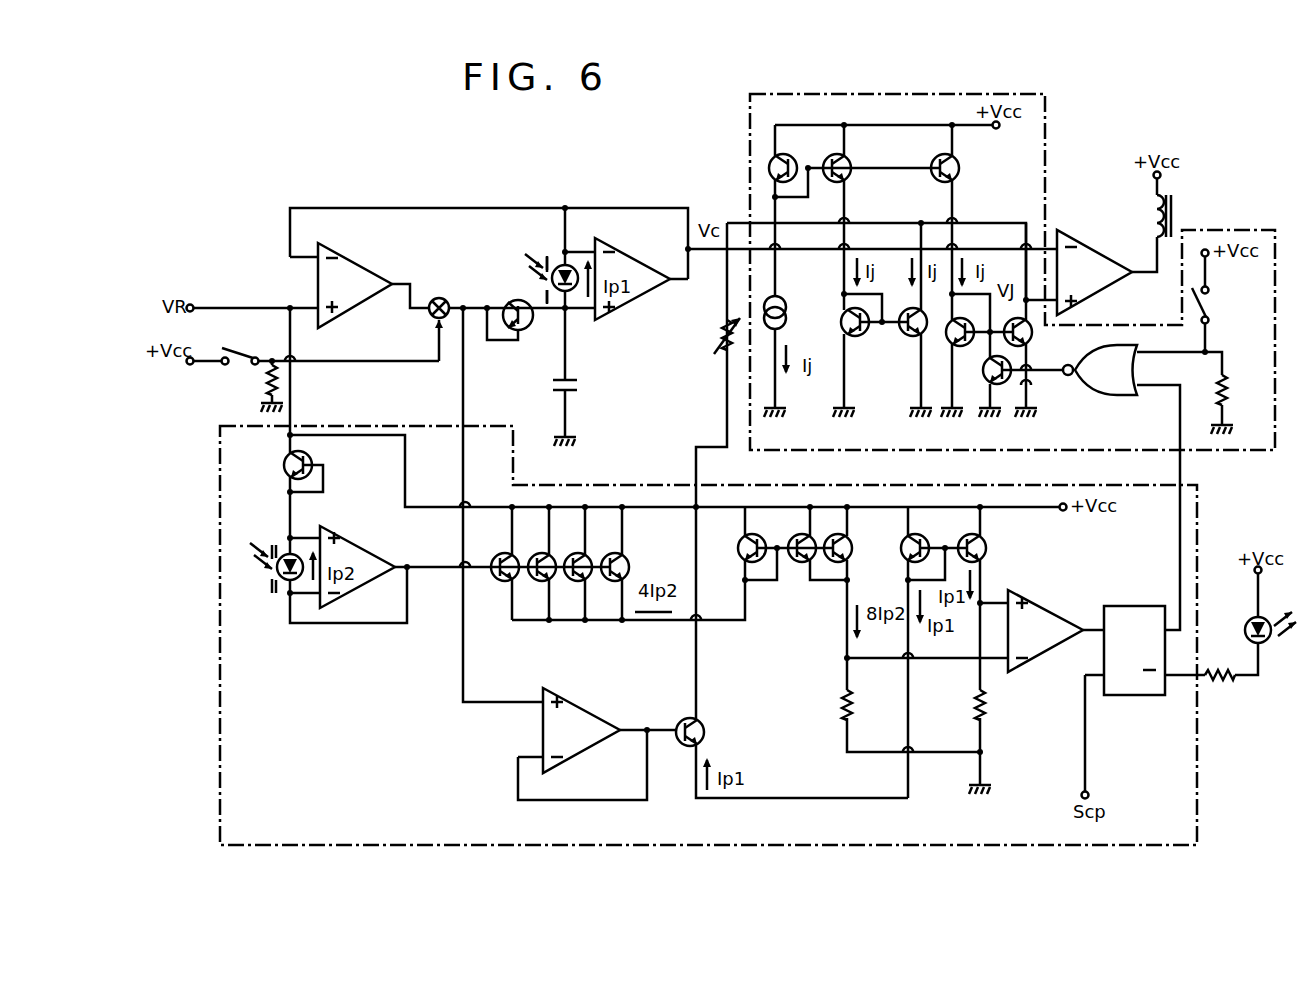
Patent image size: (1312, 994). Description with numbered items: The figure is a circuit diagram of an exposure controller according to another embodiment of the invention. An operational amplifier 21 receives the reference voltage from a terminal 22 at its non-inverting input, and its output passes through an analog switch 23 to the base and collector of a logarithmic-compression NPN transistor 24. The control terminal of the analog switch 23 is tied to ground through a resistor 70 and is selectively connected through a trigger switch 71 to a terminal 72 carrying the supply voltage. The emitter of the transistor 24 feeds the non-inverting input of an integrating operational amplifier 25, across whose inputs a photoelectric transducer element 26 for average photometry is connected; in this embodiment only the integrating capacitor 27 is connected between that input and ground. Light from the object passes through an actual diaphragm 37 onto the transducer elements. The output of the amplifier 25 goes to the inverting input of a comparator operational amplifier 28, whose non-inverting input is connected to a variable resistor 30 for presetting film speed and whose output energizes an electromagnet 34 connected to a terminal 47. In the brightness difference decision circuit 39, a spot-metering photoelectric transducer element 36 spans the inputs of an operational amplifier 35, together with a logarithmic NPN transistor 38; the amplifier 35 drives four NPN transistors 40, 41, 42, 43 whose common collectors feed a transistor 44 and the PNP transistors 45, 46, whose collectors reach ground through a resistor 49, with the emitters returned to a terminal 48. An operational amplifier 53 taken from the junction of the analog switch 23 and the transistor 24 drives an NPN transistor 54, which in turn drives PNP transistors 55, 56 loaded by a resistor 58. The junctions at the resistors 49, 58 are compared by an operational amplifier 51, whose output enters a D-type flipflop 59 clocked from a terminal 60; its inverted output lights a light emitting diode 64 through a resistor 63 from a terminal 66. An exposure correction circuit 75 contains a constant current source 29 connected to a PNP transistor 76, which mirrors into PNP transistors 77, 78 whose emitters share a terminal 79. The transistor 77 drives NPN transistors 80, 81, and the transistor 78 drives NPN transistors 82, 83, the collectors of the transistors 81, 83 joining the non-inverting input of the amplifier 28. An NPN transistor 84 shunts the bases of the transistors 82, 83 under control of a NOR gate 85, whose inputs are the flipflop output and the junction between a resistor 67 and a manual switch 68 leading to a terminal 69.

The operational amplifier 21 is at (375, 281).
The terminal 22 is at (196, 305).
The analog switch 23 is at (441, 298).
The NPN transistor 24 is at (516, 302).
The integrating operational amplifier 25 is at (655, 276).
The photoelectric transducer element 26 is at (556, 266).
The integrating capacitor 27 is at (578, 385).
The operational amplifier 28 is at (1103, 266).
The constant current source 29 is at (786, 310).
The variable resistor 30 is at (720, 336).
The electromagnet 34 is at (1174, 210).
The operational amplifier 35 is at (358, 556).
The photoelectric transducer element 36 is at (284, 554).
The actual diaphragm 37 is at (547, 303).
The NPN transistor 38 is at (284, 463).
The brightness difference decision circuit 39 is at (219, 518).
The NPN transistor 40 is at (500, 583).
The NPN transistor 41 is at (538, 583).
The NPN transistor 42 is at (574, 583).
The NPN transistor 43 is at (611, 583).
The NPN transistor 44 is at (738, 550).
The PNP transistor 45 is at (804, 534).
The PNP transistor 46 is at (853, 550).
The terminal 47 is at (1155, 178).
The terminal 48 is at (1064, 511).
The resistor 49 is at (845, 700).
The operational amplifier 51 is at (1046, 652).
The operational amplifier 53 is at (585, 716).
The NPN transistor 54 is at (704, 724).
The PNP transistor 55 is at (903, 548).
The PNP transistor 56 is at (988, 545).
The resistor 58 is at (983, 704).
The D-type flipflop 59 is at (1140, 696).
The terminal 60 is at (1088, 793).
The resistor 63 is at (1218, 680).
The light emitting diode 64 is at (1245, 628).
The terminal 66 is at (1261, 574).
The resistor 67 is at (1224, 392).
The manual switch 68 is at (1209, 316).
The terminal 69 is at (1207, 257).
The resistor 70 is at (270, 382).
The trigger switch 71 is at (234, 349).
The terminal 72 is at (190, 366).
The exposure correction circuit 75 is at (1046, 113).
The PNP transistor 76 is at (788, 158).
The PNP transistor 77 is at (847, 160).
The PNP transistor 78 is at (960, 174).
The terminal 79 is at (998, 129).
The NPN transistor 80 is at (842, 330).
The NPN transistor 81 is at (908, 336).
The NPN transistor 82 is at (950, 343).
The NPN transistor 83 is at (1030, 342).
The NPN transistor 84 is at (985, 381).
The NOR gate 85 is at (1115, 394).